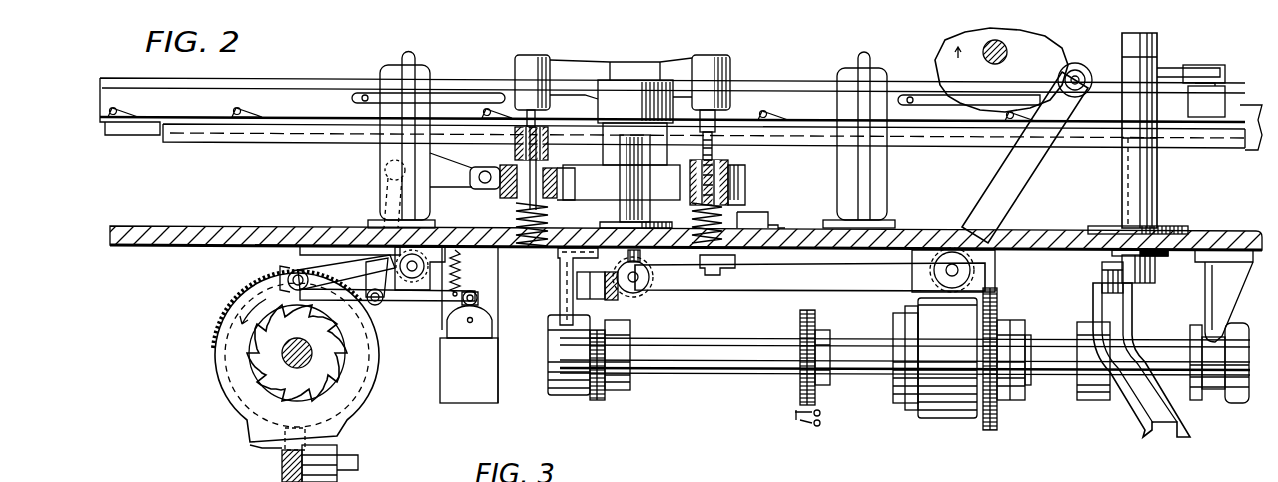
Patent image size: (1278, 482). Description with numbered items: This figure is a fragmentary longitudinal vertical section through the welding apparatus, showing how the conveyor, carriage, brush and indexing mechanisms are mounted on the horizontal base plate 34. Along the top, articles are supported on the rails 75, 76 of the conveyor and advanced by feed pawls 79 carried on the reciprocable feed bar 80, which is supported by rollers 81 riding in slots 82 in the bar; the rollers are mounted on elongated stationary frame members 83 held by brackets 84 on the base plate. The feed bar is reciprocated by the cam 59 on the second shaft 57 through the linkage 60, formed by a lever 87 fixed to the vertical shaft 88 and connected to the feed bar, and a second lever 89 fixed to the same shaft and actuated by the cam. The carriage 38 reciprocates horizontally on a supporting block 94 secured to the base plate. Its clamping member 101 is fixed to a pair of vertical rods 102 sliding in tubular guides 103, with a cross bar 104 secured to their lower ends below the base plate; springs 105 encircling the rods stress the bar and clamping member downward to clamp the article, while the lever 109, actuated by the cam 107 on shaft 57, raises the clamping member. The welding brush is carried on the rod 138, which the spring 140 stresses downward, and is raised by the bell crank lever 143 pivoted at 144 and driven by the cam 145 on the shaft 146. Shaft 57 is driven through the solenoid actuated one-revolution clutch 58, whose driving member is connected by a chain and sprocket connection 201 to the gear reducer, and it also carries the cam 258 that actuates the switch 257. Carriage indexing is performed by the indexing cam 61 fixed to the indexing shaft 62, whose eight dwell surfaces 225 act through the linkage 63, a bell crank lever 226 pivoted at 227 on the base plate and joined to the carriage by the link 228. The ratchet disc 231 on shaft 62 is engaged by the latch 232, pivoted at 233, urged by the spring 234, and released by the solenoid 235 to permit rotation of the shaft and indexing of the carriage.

The base plate 34 is at (925, 227).
The carriage 38 is at (497, 197).
The second shaft 57 is at (672, 365).
The one-revolution clutch 58 is at (933, 412).
The cam 59 is at (1148, 435).
The linkage 60 is at (1219, 62).
The indexing cam 61 is at (233, 413).
The indexing shaft 62 is at (280, 349).
The linkage 63 is at (333, 256).
The rail 75 is at (120, 132).
The rail 76 is at (222, 142).
The feed pawls 79 is at (120, 112).
The feed bar 80 is at (345, 92).
The rollers 81 is at (912, 92).
The slots 82 is at (992, 75).
The stationary frame members 83 is at (112, 82).
The brackets 84 is at (432, 88).
The lever 87 is at (1178, 68).
The vertical shaft 88 is at (1145, 208).
The second lever 89 is at (1108, 284).
The supporting block 94 is at (770, 222).
The clamping member 101 is at (630, 72).
The rods 102 is at (620, 158).
The tubular guides 103 is at (516, 160).
The cross bar 104 is at (556, 282).
The springs 105 is at (550, 214).
The cam 107 is at (600, 392).
The lever 109 is at (632, 296).
The rod 138 is at (635, 122).
The spring 140 is at (618, 186).
The bell crank lever 143 is at (1022, 168).
The pivot 144 is at (960, 270).
The cam 145 is at (1068, 48).
The shaft 146 is at (1007, 55).
The chain and sprocket connection 201 is at (995, 412).
The dwell surfaces 225 is at (284, 456).
The bell crank lever 226 is at (292, 268).
The pivot 227 is at (418, 260).
The link 228 is at (456, 180).
The ratchet disc 231 is at (262, 362).
The latch 232 is at (292, 278).
The pivot 233 is at (377, 303).
The spring 234 is at (462, 290).
The solenoid 235 is at (462, 398).
The switch 257 is at (822, 428).
The cam 258 is at (800, 390).